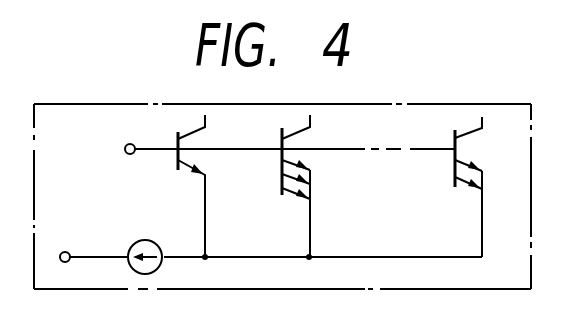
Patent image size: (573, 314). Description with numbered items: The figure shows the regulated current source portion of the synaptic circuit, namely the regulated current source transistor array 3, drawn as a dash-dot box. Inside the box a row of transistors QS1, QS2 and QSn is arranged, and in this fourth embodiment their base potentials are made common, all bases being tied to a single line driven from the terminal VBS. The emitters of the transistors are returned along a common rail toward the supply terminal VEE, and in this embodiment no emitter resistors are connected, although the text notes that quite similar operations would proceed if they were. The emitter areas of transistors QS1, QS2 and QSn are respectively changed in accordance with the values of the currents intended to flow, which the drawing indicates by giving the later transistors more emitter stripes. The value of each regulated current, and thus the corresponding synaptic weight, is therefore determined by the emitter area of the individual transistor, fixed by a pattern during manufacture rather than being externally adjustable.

The regulated current source transistor array 3 is at (478, 103).
The common base potential VBS is at (109, 144).
The emitter supply VEE is at (107, 247).
The regulated current source transistor QS1 is at (212, 186).
The regulated current source transistor QS2 is at (317, 186).
The regulated current source transistor QSn is at (484, 187).